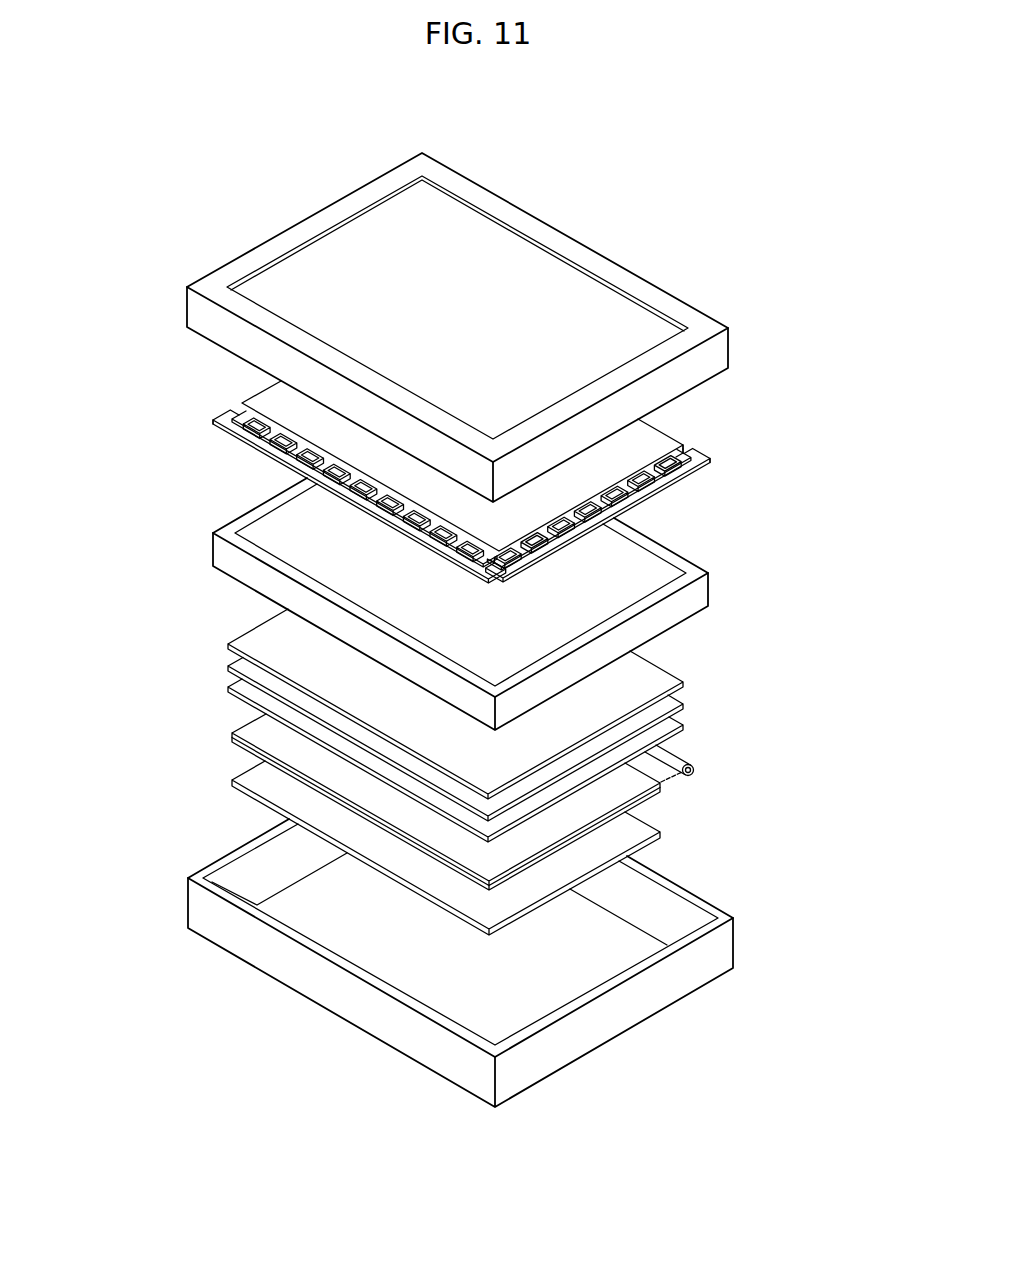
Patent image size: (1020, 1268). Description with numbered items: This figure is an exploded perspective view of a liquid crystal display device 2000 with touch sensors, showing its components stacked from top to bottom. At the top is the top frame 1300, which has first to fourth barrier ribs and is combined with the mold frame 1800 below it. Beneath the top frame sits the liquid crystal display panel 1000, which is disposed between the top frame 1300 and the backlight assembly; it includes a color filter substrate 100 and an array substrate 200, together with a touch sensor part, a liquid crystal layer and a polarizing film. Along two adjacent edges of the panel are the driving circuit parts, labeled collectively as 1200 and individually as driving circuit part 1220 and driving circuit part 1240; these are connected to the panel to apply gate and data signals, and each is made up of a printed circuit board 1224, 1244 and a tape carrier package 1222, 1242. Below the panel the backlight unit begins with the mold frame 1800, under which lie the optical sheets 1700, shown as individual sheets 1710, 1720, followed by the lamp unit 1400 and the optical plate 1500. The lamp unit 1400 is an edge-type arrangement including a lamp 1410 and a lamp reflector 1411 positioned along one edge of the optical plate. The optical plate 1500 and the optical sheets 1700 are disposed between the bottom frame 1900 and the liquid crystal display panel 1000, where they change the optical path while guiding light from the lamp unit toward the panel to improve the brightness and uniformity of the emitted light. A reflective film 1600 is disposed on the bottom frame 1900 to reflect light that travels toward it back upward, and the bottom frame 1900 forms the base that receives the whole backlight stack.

The liquid crystal display device 2000 is at (747, 206).
The top frame 1300 is at (743, 315).
The color filter substrate 100 is at (662, 440).
The array substrate 200 is at (690, 450).
The liquid crystal display panel 1000 is at (792, 389).
The tape carrier package 1222 is at (697, 457).
The printed circuit board 1224 is at (707, 466).
The driving circuit part 1220 is at (803, 453).
The tape carrier package 1242 is at (240, 405).
The printed circuit board 1244 is at (220, 423).
The driving circuit part 1240 is at (96, 397).
The mold frame 1800 is at (702, 588).
The optical sheet 1710 is at (670, 678).
The optical sheet 1720 is at (673, 723).
The optical sheets 1700 is at (800, 678).
The lamp reflector 1411 is at (694, 760).
The lamp 1410 is at (675, 777).
The lamp unit 1400 is at (800, 747).
The optical plate 1500 is at (650, 793).
The reflective film 1600 is at (660, 833).
The bottom frame 1900 is at (703, 956).
The light source module 1200 is at (749, 1094).